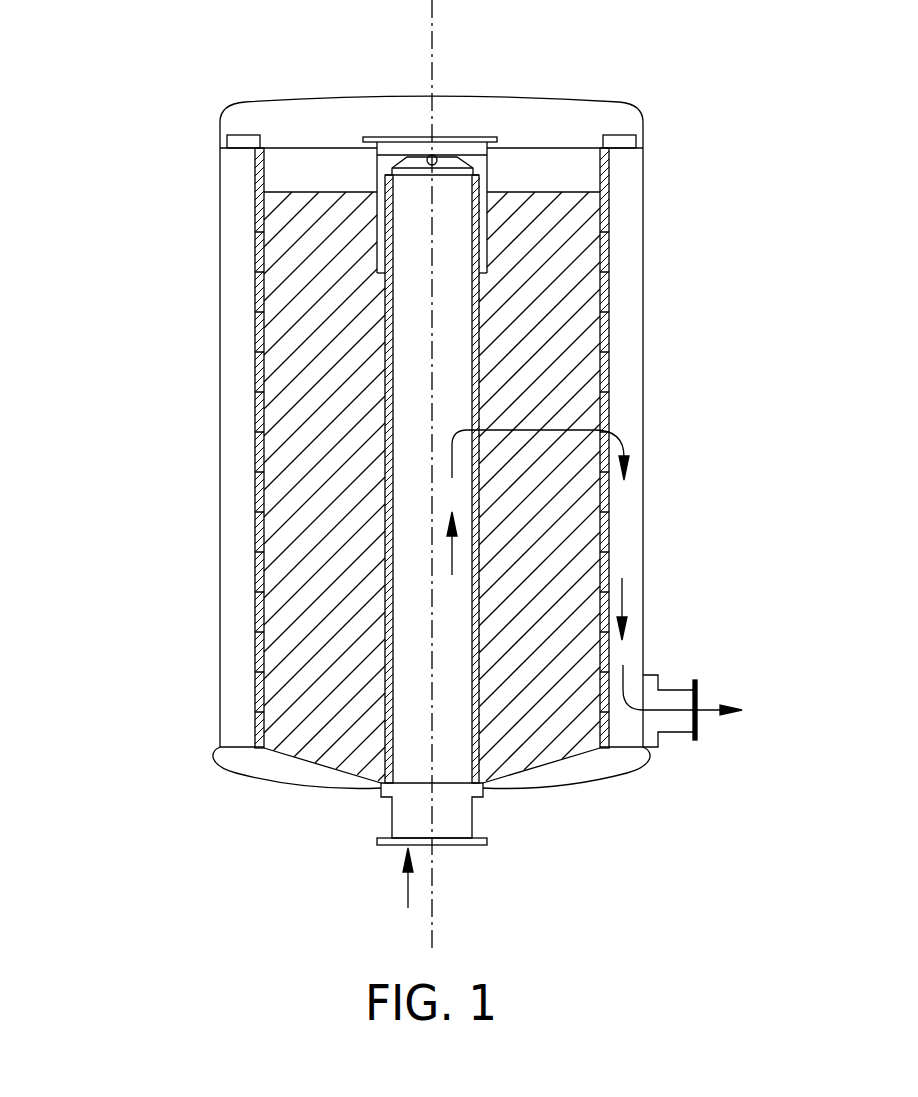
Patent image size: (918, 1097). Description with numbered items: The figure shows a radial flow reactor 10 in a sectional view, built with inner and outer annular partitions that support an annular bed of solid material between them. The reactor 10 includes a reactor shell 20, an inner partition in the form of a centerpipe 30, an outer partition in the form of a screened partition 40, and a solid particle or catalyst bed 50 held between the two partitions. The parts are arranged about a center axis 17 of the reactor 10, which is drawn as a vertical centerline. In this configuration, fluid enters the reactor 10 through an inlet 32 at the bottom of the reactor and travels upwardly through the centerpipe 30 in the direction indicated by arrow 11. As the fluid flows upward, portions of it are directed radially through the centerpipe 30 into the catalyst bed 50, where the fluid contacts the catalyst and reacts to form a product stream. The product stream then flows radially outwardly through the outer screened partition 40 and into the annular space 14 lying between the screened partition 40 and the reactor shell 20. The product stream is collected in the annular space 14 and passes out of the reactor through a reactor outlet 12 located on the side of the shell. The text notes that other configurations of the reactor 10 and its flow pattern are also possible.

The radial flow reactor 10 is at (168, 705).
The arrow 11 is at (408, 876).
The reactor outlet 12 is at (677, 690).
The annular space 14 is at (232, 226).
The center axis 17 is at (432, 30).
The reactor shell 20 is at (220, 318).
The centerpipe 30 is at (393, 325).
The inlet 32 is at (458, 845).
The screened partition 40 is at (258, 428).
The catalyst bed 50 is at (432, 487).